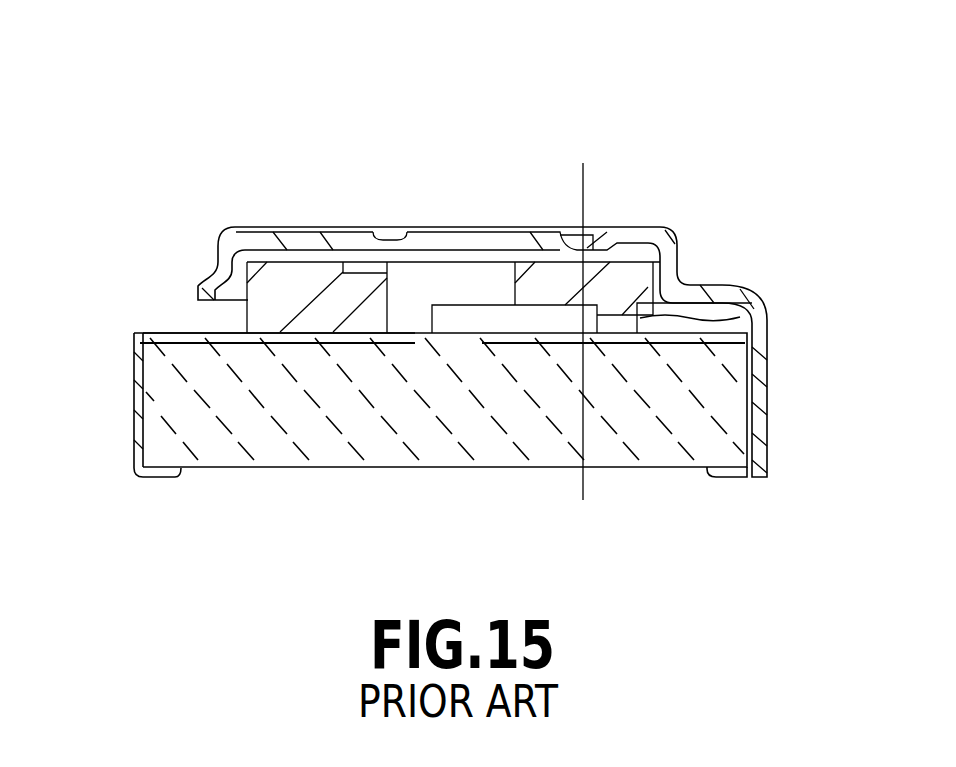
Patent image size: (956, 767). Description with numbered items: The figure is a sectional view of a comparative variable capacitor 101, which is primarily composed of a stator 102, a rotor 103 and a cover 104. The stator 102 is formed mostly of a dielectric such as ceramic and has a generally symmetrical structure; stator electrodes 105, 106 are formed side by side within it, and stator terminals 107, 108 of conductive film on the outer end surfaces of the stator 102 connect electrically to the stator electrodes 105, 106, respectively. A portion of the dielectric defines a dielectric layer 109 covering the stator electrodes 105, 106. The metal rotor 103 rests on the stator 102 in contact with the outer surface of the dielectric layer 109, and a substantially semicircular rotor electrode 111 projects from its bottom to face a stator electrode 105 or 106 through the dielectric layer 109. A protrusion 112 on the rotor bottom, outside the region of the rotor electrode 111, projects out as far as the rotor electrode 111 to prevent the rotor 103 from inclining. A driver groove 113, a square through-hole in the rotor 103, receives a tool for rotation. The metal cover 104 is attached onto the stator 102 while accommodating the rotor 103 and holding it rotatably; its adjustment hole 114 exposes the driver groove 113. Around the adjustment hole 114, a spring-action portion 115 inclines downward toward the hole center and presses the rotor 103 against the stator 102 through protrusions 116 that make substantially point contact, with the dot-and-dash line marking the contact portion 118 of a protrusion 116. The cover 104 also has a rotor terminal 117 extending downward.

The variable capacitor 101 is at (274, 45).
The stator 102 is at (400, 476).
The rotor 103 is at (517, 227).
The cover 104 is at (680, 221).
The stator electrode 105 is at (277, 347).
The stator electrode 106 is at (565, 347).
The stator terminal 107 is at (133, 402).
The stator terminal 108 is at (733, 479).
The dielectric layer 109 is at (178, 339).
The rotor electrode 111 is at (317, 232).
The protrusion 112 is at (750, 320).
The driver groove 113 is at (400, 305).
The adjustment hole 114 is at (352, 236).
The spring-action portion 115 is at (287, 230).
The protrusions 116 is at (392, 240).
The rotor terminal 117 is at (768, 412).
The contact portion 118 is at (584, 180).